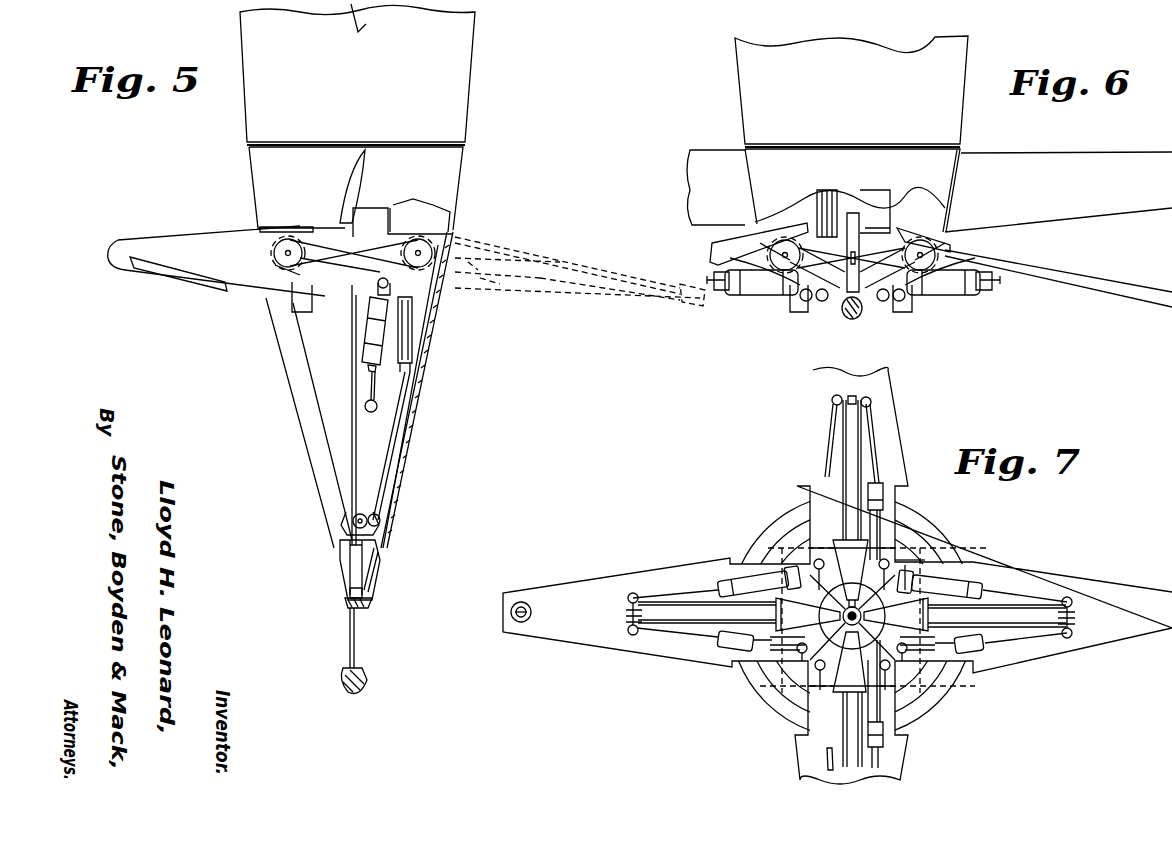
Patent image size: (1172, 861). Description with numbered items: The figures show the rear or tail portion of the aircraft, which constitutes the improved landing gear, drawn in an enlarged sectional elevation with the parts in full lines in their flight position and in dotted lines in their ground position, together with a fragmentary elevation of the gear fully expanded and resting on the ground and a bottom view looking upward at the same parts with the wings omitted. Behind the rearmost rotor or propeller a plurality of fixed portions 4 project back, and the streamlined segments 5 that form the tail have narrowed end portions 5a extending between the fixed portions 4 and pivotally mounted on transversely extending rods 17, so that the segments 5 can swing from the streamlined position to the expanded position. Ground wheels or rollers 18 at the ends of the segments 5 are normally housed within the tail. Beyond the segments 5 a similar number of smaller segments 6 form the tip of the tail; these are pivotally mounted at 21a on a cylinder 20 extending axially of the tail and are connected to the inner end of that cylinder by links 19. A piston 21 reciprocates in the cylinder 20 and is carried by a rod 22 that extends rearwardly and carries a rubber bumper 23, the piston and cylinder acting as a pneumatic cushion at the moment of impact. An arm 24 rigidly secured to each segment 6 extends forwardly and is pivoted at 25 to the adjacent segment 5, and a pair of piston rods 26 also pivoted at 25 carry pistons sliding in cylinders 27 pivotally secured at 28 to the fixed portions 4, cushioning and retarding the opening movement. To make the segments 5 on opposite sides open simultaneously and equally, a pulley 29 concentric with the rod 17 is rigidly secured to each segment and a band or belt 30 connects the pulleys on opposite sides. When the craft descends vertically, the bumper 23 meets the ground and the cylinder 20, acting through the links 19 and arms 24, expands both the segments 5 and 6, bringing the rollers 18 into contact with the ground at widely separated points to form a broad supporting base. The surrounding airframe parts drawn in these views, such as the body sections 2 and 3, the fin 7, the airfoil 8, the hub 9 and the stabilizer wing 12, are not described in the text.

In FIG. 5, the fuselage body 2 is at (470, 104).
In FIG. 6, the fuselage body 2 is at (740, 80).
In FIG. 5, the lower fuselage section 3 is at (457, 176).
In FIG. 6, the lower fuselage section 3 is at (958, 155).
In FIG. 5, the fixed portions 4 is at (312, 305).
In FIG. 6, the fixed portions 4 is at (803, 315).
In FIG. 7, the fixed portions 4 is at (775, 545).
In FIG. 5, the streamlined segments 5 is at (412, 452).
In FIG. 6, the streamlined segments 5 is at (720, 245).
In FIG. 7, the streamlined segments 5 is at (887, 432).
In FIG. 7, the narrowed end portions 5a is at (890, 510).
In FIG. 5, the smaller segments 6 is at (340, 550).
In FIG. 6, the smaller segments 6 is at (795, 268).
In FIG. 7, the smaller segments 6 is at (880, 645).
In FIG. 5, the fin 7 is at (357, 36).
In FIG. 5, the auxiliary airfoil 8 is at (360, 170).
In FIG. 6, the auxiliary airfoil 8 is at (690, 185).
In FIG. 6, the hub 9 is at (876, 215).
In FIG. 7, the hub 9 is at (852, 620).
In FIG. 5, the stabilizer wing 12 is at (190, 240).
In FIG. 5, the transversely extending rods 17 is at (419, 248).
In FIG. 6, the transversely extending rods 17 is at (785, 248).
In FIG. 7, the transversely extending rods 17 is at (824, 545).
In FIG. 5, the ground wheels or rollers 18 is at (355, 512).
In FIG. 6, the ground wheels or rollers 18 is at (1171, 327).
In FIG. 7, the ground wheels or rollers 18 is at (520, 600).
In FIG. 5, the links 19 is at (366, 562).
In FIG. 6, the links 19 is at (824, 302).
In FIG. 5, the cylinder 20 is at (376, 386).
In FIG. 6, the cylinder 20 is at (856, 222).
In FIG. 5, the piston 21 is at (350, 600).
In FIG. 7, the piston 21 is at (850, 573).
In FIG. 5, the pivot mounting 21a is at (368, 604).
In FIG. 6, the pivot mounting 21a is at (884, 302).
In FIG. 5, the rod 22 is at (350, 650).
In FIG. 5, the bumper 23 is at (368, 684).
In FIG. 6, the bumper 23 is at (856, 320).
In FIG. 5, the arm 24 is at (496, 258).
In FIG. 6, the arm 24 is at (755, 275).
In FIG. 7, the arm 24 is at (855, 464).
In FIG. 5, the pivot 25 is at (371, 413).
In FIG. 7, the pivot 25 is at (858, 397).
In FIG. 7, the piston rods 26 is at (835, 441).
In FIG. 5, the cylinders 27 is at (410, 342).
In FIG. 6, the cylinders 27 is at (738, 294).
In FIG. 7, the cylinders 27 is at (884, 490).
In FIG. 5, the pivot 28 is at (391, 290).
In FIG. 7, the pivot 28 is at (940, 550).
In FIG. 5, the pulley 29 is at (283, 283).
In FIG. 6, the pulley 29 is at (925, 255).
In FIG. 7, the pulley 29 is at (900, 550).
In FIG. 5, the band or belt 30 is at (336, 266).
In FIG. 6, the band or belt 30 is at (832, 225).
In FIG. 7, the band or belt 30 is at (808, 615).